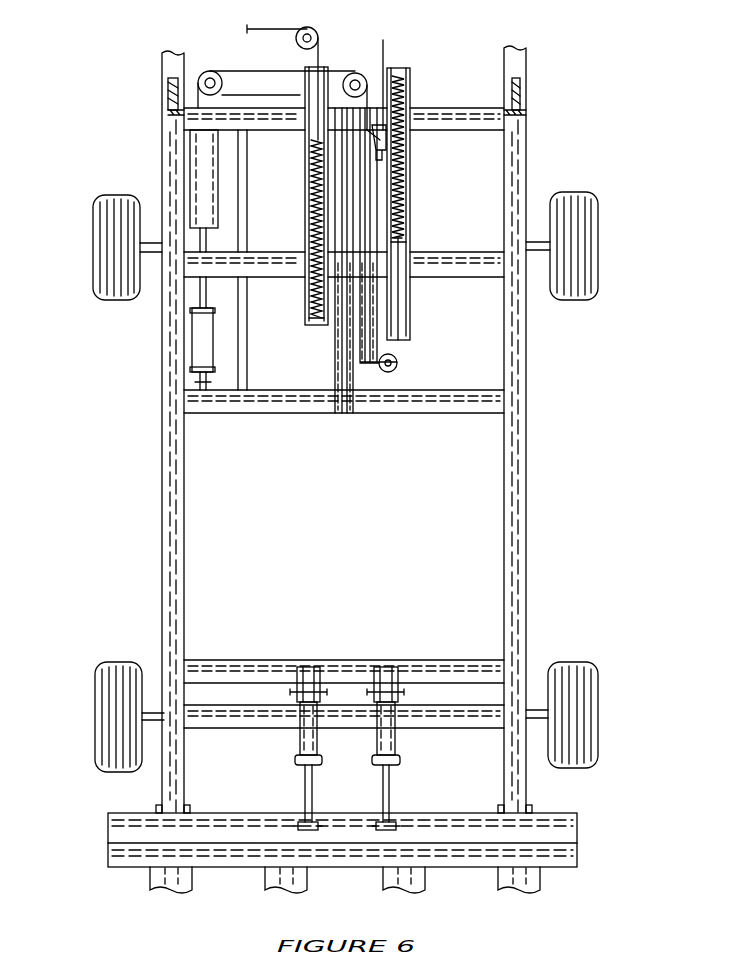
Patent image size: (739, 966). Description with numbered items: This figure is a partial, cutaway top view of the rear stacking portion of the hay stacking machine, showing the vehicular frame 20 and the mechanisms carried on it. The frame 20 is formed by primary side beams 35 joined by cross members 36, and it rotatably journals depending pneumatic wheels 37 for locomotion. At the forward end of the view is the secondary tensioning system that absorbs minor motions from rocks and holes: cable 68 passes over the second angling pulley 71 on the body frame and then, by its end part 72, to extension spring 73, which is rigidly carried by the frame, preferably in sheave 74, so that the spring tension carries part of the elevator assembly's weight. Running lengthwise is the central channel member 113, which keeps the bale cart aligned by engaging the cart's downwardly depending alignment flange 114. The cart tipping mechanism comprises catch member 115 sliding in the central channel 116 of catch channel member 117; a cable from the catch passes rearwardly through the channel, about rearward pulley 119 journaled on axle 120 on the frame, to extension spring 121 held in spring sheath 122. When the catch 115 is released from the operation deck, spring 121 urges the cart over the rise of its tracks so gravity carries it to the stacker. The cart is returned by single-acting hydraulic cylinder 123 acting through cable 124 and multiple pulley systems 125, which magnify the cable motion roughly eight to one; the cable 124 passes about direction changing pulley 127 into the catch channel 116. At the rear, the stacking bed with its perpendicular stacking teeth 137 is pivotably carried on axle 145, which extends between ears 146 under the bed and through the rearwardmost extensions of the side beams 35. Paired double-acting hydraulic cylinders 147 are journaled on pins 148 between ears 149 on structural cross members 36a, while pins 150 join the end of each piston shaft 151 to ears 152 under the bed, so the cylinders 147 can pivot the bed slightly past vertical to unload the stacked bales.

The vehicular frame 20 is at (508, 599).
The primary side beams 35 is at (165, 508).
The cross members 36 is at (425, 112).
The structural cross members 36a is at (474, 670).
The pneumatic wheels 37 is at (112, 248).
The cable 68 is at (275, 28).
The second angling pulley 71 is at (318, 38).
The end part 72 is at (306, 146).
The extension spring 73 is at (305, 214).
The sheave 74 is at (305, 304).
The central channel member 113 is at (352, 416).
The alignment flange 114 is at (342, 416).
The catch member 115 is at (382, 152).
The central channel 116 is at (368, 178).
The catch channel member 117 is at (375, 200).
The rearward pulley 119 is at (397, 362).
The axle 120 is at (396, 368).
The extension spring 121 is at (398, 212).
The spring sheath 122 is at (410, 238).
The single-acting hydraulic cylinder 123 is at (205, 345).
The cable 124 is at (290, 74).
The multiple pulley systems 125 is at (202, 173).
The direction changing pulley 127 is at (208, 70).
The stacking teeth 137 is at (190, 880).
The axle 145 is at (190, 810).
The ears 146 is at (158, 810).
The double-acting hydraulic cylinders 147 is at (304, 738).
The pins 148 is at (296, 692).
The ears 149 is at (306, 672).
The pins 150 is at (300, 820).
The piston shaft 151 is at (384, 795).
The ears 152 is at (320, 822).